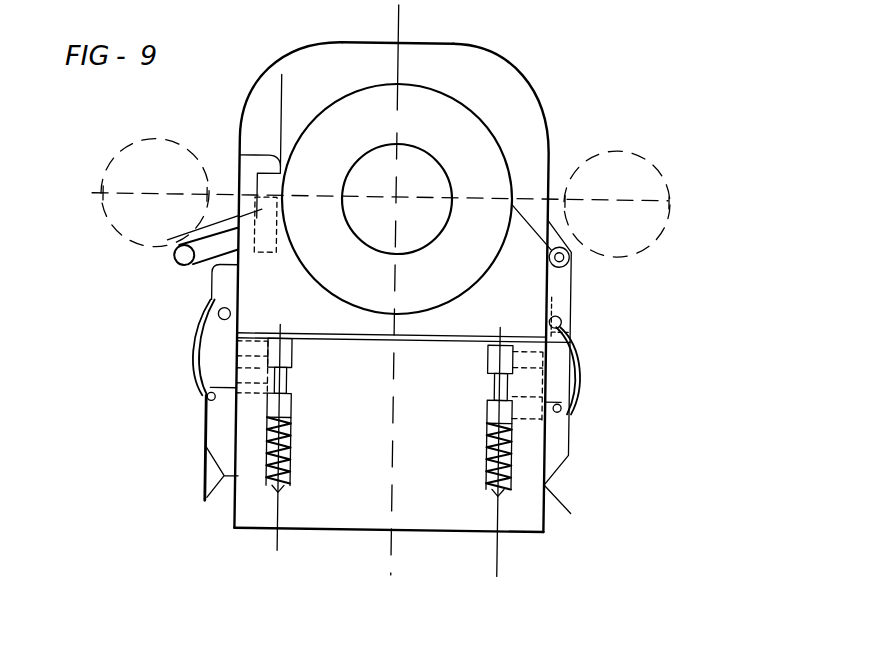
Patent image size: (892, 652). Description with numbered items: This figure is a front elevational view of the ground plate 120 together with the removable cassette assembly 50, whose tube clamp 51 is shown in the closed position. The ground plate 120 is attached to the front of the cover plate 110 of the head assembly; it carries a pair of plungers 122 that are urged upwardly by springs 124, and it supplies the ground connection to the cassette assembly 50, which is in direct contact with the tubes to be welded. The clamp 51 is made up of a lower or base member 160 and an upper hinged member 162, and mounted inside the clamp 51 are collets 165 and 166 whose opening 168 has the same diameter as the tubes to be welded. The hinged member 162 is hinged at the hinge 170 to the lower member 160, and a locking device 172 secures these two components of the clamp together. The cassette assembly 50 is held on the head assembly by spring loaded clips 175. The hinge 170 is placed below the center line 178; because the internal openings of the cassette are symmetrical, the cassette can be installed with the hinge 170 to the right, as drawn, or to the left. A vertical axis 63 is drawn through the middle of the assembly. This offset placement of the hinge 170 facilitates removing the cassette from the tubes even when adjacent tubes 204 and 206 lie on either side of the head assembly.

The cassette assembly 50 is at (536, 82).
The clamp 51 is at (468, 68).
The rotation axis 63 is at (396, 200).
The cover plate 110 is at (263, 122).
The ground plate 120 is at (445, 522).
The plungers 122 is at (294, 351).
The springs 124 is at (294, 465).
The lower or base member 160 is at (248, 294).
The upper hinged member 162 is at (517, 115).
The collet 165 is at (473, 157).
The collet 166 is at (465, 268).
The opening 168 is at (362, 173).
The hinge 170 is at (575, 263).
The locking device 172 is at (168, 243).
The spring loaded clips 175 is at (195, 372).
The center line 178 is at (673, 204).
The adjacent tube 204 is at (658, 172).
The adjacent tube 206 is at (108, 172).